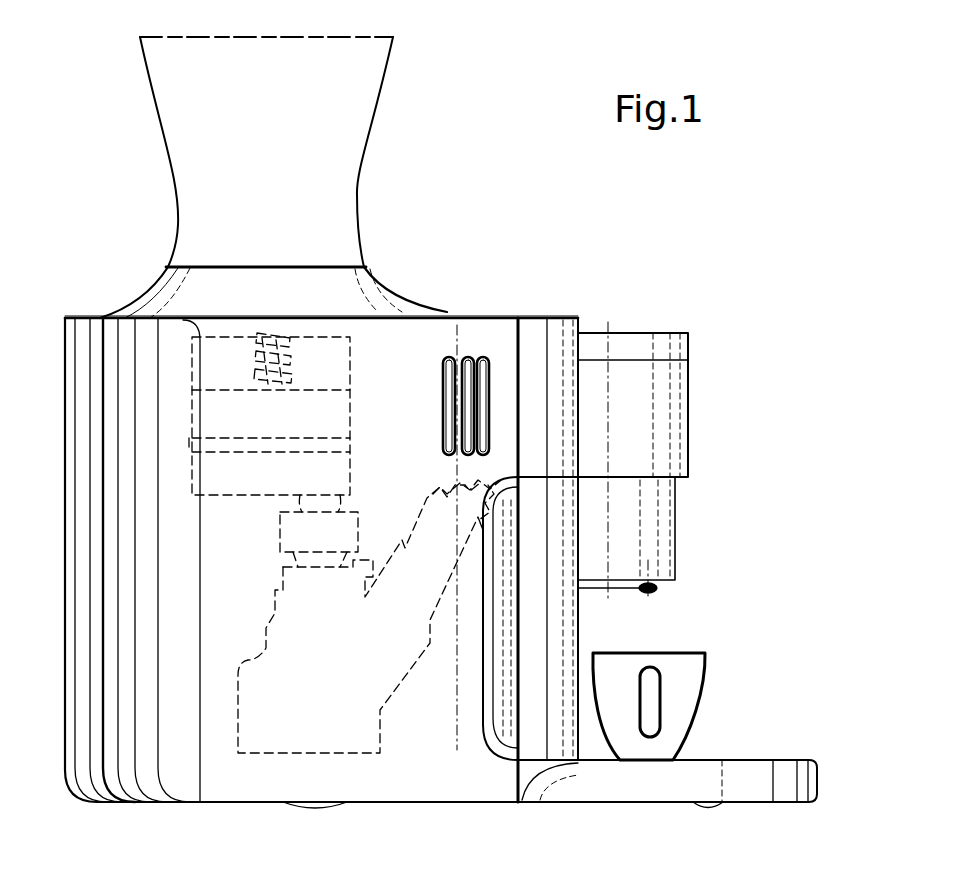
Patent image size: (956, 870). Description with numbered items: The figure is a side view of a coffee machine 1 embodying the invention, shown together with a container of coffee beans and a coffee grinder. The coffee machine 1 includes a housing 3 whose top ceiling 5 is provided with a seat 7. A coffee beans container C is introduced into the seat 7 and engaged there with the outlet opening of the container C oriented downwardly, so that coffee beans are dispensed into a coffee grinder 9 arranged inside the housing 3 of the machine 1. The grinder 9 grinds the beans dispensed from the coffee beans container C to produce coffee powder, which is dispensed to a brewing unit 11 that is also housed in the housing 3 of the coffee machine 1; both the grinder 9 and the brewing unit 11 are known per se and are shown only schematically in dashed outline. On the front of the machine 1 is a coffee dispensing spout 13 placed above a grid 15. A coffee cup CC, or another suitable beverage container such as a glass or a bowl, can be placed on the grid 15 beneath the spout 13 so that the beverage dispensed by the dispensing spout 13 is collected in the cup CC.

The coffee machine 1 is at (686, 293).
The housing 3 is at (473, 311).
The top ceiling 5 is at (389, 294).
The seat 7 is at (343, 267).
The coffee grinder 9 is at (331, 461).
The brewing unit 11 is at (262, 631).
The coffee dispensing spout 13 is at (652, 590).
The grid 15 is at (724, 766).
The coffee beans container C is at (357, 104).
The coffee cup CC is at (680, 655).